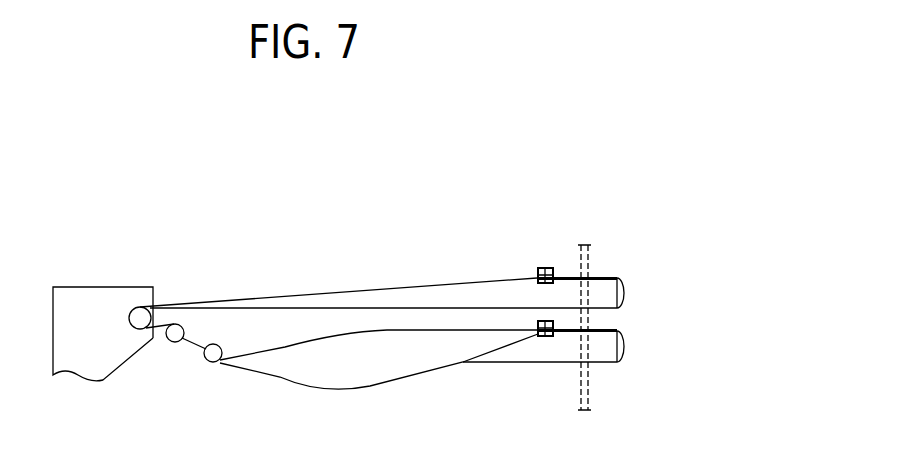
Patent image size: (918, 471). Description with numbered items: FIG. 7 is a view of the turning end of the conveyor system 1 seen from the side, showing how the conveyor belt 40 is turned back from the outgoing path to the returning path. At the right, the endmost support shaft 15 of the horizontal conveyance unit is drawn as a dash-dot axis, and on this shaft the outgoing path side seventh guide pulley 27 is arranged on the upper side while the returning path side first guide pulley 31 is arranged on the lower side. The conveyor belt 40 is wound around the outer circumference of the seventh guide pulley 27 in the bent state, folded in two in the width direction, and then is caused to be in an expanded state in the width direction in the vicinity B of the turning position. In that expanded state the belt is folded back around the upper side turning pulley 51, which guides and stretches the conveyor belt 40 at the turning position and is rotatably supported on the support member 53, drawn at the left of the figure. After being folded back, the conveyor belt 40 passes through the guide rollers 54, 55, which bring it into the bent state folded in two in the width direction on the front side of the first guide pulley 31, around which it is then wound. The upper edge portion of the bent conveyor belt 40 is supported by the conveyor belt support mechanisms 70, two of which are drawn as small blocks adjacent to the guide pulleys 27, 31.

The sheet conveying apparatus 1 is at (458, 214).
The support shaft 15 is at (588, 263).
The outgoing path side seventh guide pulley 27 is at (617, 278).
The returning path side first guide pulley 31 is at (617, 330).
The conveyor belt 40 is at (528, 363).
The upper side turning pulley 51 is at (140, 320).
The support member 53 is at (90, 303).
The guide roller 54 is at (175, 342).
The guide roller 55 is at (213, 362).
The conveyor belt support mechanism 70 is at (548, 268).
The vicinity of the turning position B is at (272, 298).